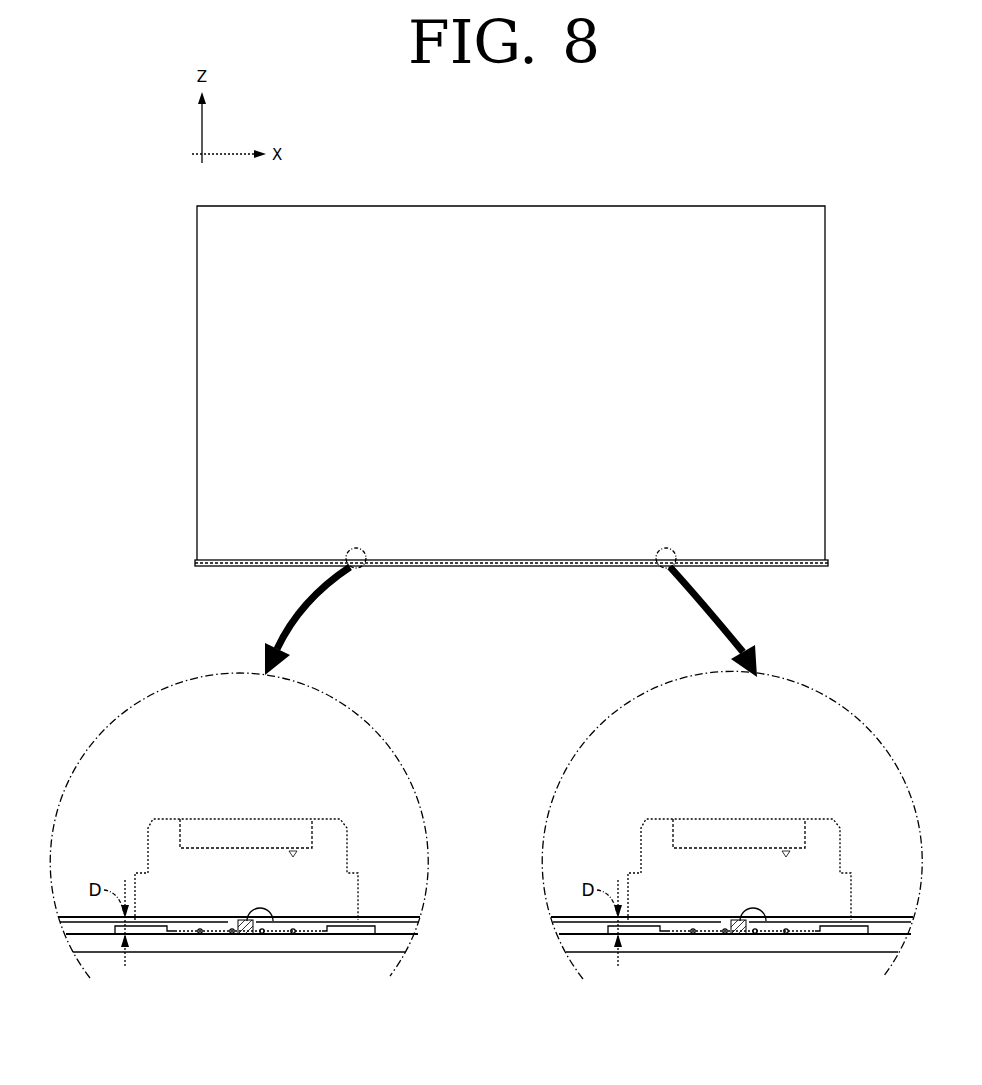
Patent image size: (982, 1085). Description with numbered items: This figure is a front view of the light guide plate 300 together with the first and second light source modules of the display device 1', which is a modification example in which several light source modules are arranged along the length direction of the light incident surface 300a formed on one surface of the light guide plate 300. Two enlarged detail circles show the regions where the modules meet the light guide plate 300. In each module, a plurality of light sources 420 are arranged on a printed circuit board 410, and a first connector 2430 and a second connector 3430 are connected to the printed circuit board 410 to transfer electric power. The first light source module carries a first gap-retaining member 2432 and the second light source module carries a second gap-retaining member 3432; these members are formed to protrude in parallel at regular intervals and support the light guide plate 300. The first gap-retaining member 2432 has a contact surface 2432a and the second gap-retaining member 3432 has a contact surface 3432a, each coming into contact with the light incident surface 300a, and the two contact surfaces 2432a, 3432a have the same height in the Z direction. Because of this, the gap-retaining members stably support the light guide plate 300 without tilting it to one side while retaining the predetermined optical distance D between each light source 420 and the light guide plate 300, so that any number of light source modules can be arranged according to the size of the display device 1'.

The display device 1' is at (506, 131).
The light guide plate 300 is at (712, 196).
The light incident surface 300a is at (392, 917).
The printed circuit board 410 is at (373, 950).
The light source 420 is at (147, 936).
The first connector 2430 is at (134, 810).
The first gap-retaining member 2432 is at (243, 936).
The contact surface 2432a is at (268, 922).
The second connector 3430 is at (627, 810).
The second gap-retaining member 3432 is at (736, 936).
The contact surface 3432a is at (761, 922).